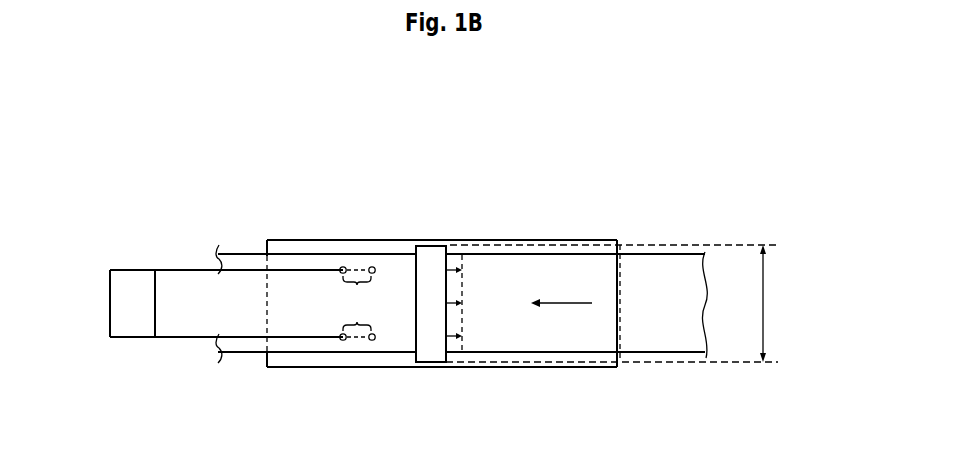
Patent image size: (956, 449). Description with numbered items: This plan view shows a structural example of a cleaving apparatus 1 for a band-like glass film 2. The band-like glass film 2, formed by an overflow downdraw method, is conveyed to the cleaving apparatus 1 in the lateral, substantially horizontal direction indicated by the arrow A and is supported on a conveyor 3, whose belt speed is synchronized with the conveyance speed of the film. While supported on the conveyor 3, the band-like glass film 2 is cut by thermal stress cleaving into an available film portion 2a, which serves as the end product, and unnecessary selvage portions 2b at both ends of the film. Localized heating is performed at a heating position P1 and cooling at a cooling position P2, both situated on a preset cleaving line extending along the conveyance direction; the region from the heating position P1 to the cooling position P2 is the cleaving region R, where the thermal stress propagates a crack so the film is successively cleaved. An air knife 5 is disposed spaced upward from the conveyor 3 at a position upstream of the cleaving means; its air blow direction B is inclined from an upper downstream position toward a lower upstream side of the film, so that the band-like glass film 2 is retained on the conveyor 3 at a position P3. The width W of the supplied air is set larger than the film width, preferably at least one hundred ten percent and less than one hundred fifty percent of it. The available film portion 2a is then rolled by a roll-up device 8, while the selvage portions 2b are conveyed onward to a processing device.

The cleaving apparatus 1 is at (556, 193).
The band-like glass film 2 is at (397, 352).
The available film portion 2a is at (180, 321).
The selvage portions 2b is at (243, 262).
The conveyor 3 is at (577, 370).
The air knife 5 is at (432, 256).
The roll-up device 8 is at (130, 265).
The heating position P1 is at (372, 266).
The cooling position P2 is at (343, 266).
The retaining position P3 is at (463, 262).
The air blow direction B is at (450, 266).
The cleaving region R is at (357, 303).
The conveyance direction A is at (561, 292).
The width of air W is at (774, 303).